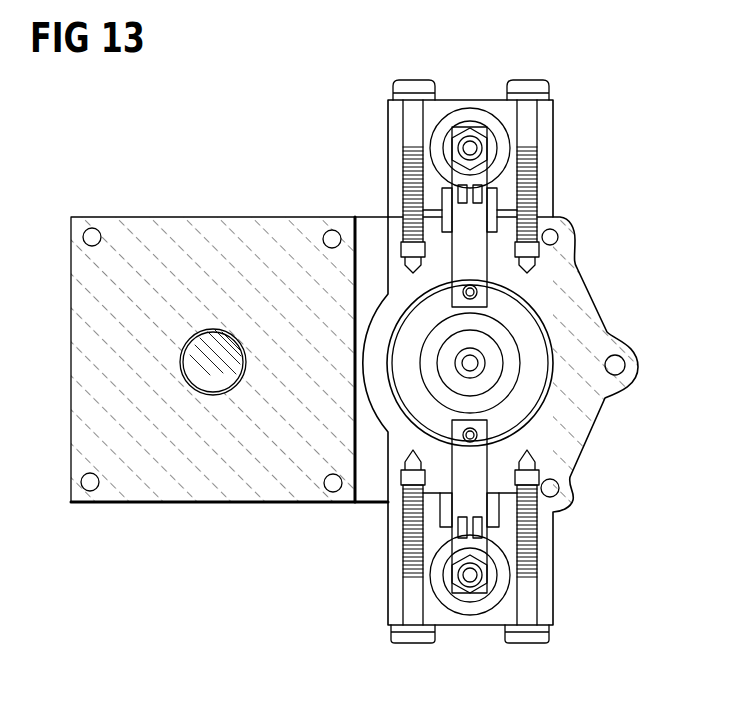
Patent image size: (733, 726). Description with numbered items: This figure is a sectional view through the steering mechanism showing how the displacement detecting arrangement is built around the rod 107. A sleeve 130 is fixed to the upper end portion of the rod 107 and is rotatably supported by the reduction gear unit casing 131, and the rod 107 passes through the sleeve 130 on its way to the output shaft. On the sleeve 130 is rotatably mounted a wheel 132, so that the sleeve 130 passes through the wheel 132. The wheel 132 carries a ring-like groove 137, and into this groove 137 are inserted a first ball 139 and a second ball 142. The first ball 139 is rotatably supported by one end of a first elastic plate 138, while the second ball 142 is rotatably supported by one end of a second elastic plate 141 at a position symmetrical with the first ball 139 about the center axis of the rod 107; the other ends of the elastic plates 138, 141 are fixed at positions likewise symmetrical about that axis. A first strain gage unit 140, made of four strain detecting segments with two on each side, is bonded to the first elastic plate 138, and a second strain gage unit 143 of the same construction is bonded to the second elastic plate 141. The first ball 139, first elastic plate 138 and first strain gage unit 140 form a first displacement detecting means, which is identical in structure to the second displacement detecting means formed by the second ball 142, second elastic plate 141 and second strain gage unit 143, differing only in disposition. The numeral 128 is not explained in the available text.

The rod 107 is at (523, 403).
The mounting plate aperture 128 is at (208, 372).
The sleeve 130 is at (483, 348).
The reduction gear unit casing 131 is at (577, 268).
The wheel 132 is at (470, 367).
The ring-like groove 137 is at (478, 435).
The first elastic plate 138 is at (473, 548).
The first ball 139 is at (497, 447).
The first strain gage unit 140 is at (482, 528).
The second elastic plate 141 is at (472, 176).
The second ball 142 is at (473, 292).
The second strain gage unit 143 is at (487, 210).